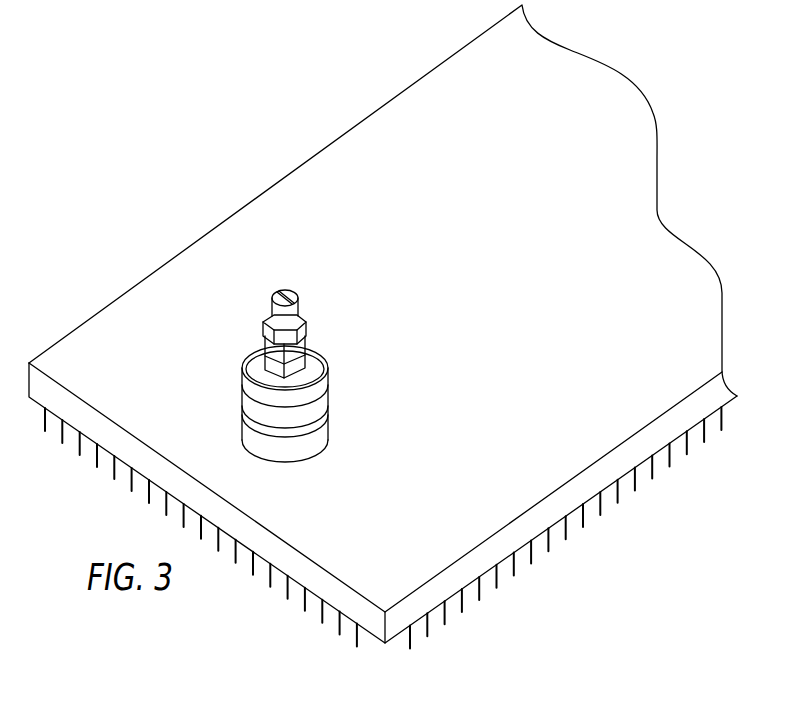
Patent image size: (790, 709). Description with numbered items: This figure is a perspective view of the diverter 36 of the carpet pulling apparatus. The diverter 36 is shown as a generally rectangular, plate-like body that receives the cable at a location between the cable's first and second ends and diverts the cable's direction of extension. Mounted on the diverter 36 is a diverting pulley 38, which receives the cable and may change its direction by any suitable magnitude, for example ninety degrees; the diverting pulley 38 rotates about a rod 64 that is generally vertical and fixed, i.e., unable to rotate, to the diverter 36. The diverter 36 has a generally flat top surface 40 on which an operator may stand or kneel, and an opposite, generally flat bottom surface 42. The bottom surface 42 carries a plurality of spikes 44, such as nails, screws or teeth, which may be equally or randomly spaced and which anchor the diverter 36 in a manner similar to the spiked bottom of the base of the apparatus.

The diverter 36 is at (275, 215).
The top surface 40 is at (335, 172).
The diverting pulley 38 is at (330, 427).
The rod 64 is at (298, 303).
The bottom surface 42 is at (452, 595).
The spikes 44 is at (548, 527).